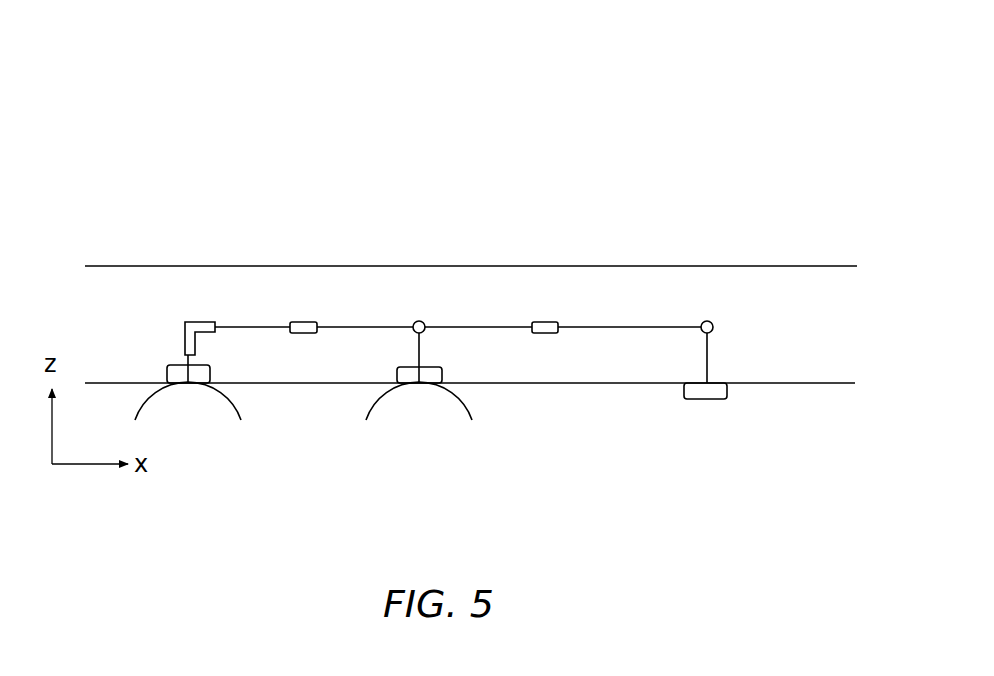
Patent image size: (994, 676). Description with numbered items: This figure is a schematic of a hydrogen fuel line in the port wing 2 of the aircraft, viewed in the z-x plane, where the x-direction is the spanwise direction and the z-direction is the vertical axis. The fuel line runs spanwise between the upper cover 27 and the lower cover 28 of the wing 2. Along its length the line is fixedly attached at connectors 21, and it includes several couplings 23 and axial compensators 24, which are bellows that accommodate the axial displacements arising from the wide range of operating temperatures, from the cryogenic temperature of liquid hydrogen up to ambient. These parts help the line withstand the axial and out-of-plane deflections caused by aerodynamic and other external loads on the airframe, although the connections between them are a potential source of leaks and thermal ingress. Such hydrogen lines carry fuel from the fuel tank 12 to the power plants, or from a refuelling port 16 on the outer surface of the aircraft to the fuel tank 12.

The port wing 2 is at (764, 116).
The fuel tank 12 is at (241, 418).
The refuelling port 16 is at (708, 414).
The connector 21 is at (180, 372).
The coupling 23 is at (195, 322).
The axial compensator 24 is at (305, 322).
The upper cover 27 is at (780, 265).
The lower cover 28 is at (797, 384).